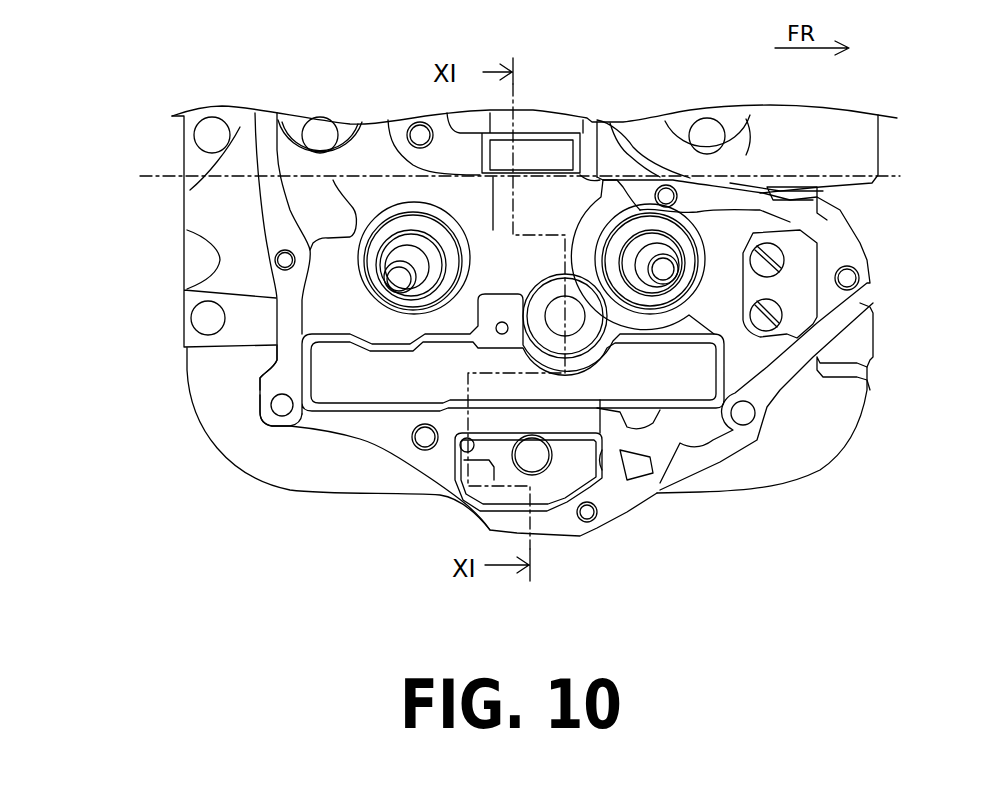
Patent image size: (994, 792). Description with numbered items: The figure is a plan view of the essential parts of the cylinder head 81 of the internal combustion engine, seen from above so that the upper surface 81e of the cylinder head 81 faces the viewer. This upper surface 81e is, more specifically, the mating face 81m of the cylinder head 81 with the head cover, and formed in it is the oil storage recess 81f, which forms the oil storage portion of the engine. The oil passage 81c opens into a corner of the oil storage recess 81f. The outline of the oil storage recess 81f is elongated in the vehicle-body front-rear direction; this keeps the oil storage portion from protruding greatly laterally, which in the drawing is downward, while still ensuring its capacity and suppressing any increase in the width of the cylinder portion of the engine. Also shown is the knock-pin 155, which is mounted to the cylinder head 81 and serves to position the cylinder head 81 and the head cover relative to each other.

The cylinder head 81 is at (156, 252).
The upper surface 81e is at (260, 372).
The mating face 81m is at (333, 426).
The oil passage 81c is at (465, 450).
The oil storage recess 81f is at (594, 457).
The knock-pin 155 is at (547, 465).